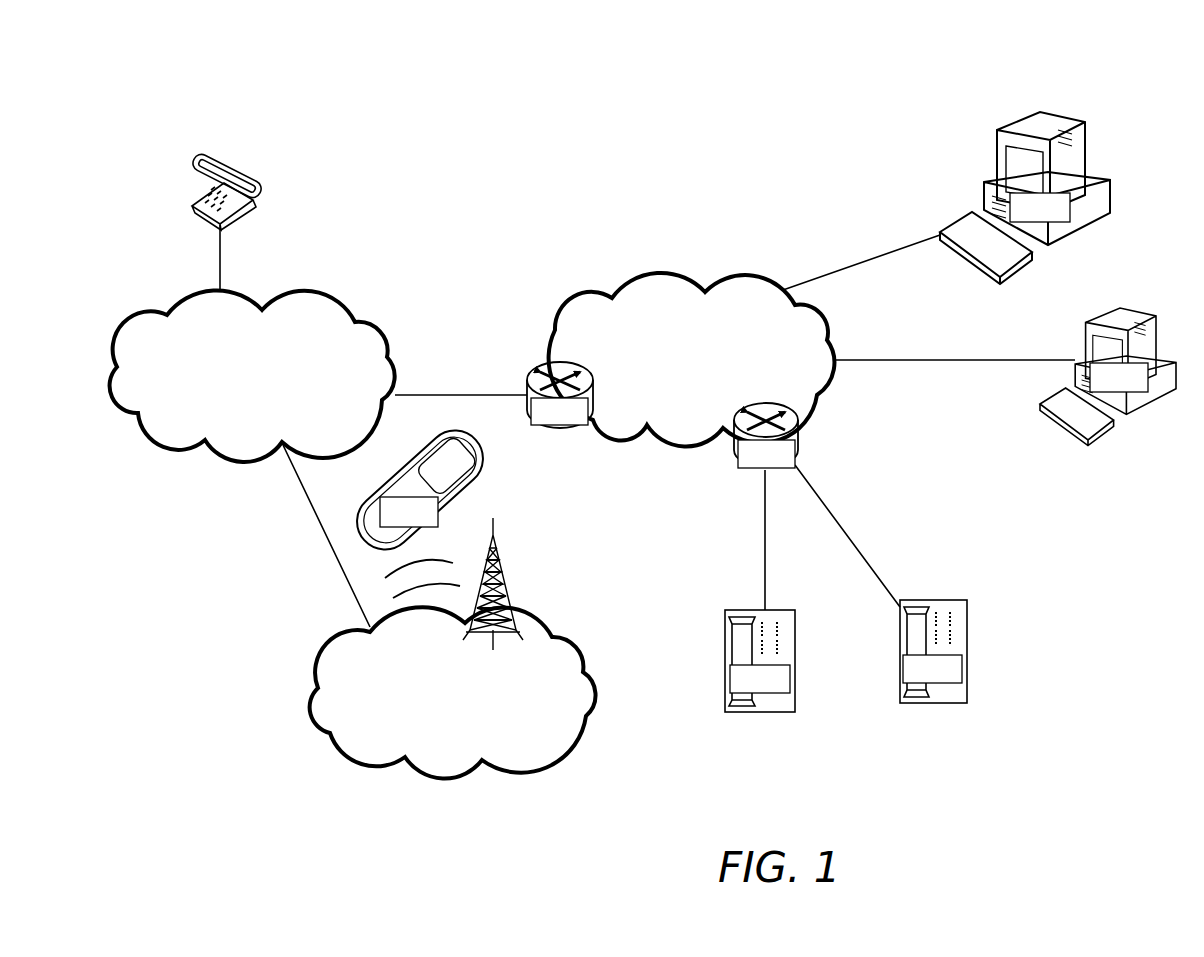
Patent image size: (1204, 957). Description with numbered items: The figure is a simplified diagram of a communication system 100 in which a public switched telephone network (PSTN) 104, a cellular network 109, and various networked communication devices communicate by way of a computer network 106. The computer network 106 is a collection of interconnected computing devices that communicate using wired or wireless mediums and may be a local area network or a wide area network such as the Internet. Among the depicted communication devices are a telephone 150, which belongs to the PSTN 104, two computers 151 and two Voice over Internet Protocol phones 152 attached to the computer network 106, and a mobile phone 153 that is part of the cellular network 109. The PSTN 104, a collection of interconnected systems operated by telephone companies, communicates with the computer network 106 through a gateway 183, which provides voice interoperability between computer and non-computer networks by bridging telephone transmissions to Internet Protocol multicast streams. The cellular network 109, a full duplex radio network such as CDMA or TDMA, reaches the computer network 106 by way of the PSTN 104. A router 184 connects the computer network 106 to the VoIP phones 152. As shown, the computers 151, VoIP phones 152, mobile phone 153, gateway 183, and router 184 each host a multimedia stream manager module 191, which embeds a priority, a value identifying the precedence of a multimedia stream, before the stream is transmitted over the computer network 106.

The communication system 100 is at (912, 70).
The public switched telephone network (PSTN) 104 is at (252, 376).
The computer network 106 is at (692, 360).
The cellular network 109 is at (453, 648).
The telephone 150 is at (260, 192).
The computer 151 is at (1087, 222).
The Voice over Internet Protocol (VoIP) phone 152 is at (725, 643).
The mobile phone 153 is at (475, 487).
The gateway 183 is at (545, 370).
The router 184 is at (800, 432).
The multimedia stream manager module 191 is at (764, 443).